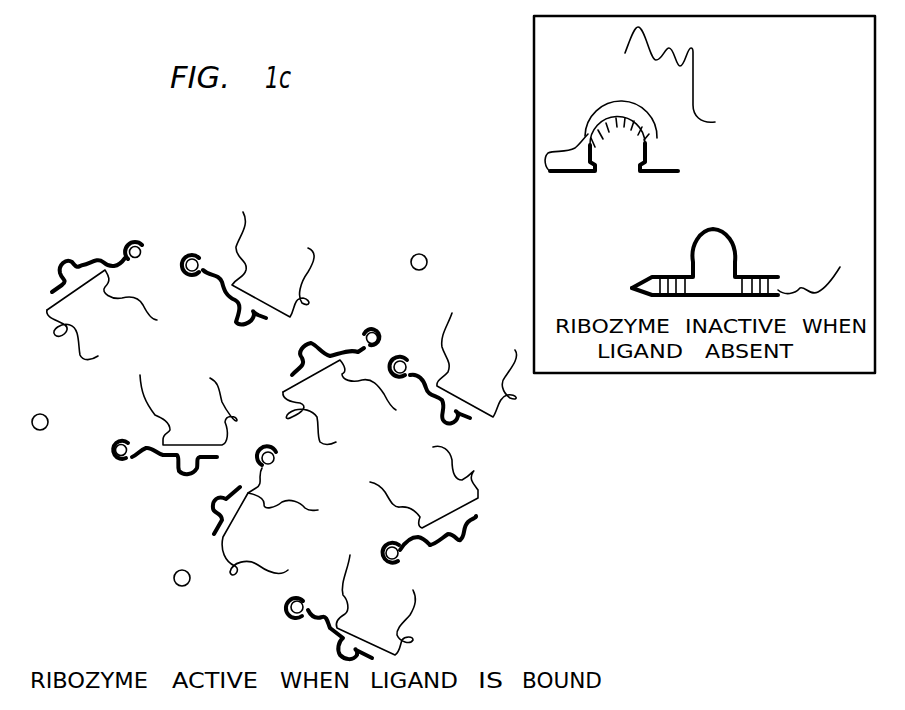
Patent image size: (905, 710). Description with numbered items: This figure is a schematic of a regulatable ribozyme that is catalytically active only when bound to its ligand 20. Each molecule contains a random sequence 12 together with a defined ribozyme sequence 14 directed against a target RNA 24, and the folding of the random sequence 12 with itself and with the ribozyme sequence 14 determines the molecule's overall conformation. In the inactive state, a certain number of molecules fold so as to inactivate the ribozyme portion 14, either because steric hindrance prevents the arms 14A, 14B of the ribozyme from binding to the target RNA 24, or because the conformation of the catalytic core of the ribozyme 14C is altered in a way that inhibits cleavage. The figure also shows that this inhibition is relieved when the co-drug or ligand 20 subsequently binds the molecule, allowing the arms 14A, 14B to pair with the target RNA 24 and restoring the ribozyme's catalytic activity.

The random sequence 12 is at (621, 121).
The ribozyme sequence 14 is at (415, 396).
The arm of the ribozyme portion 14A is at (534, 406).
The arm of the ribozyme portion 14B is at (625, 392).
The catalytic core of the ribozyme 14C is at (466, 546).
The ligand 20 is at (269, 418).
The target RNA 24 is at (450, 341).